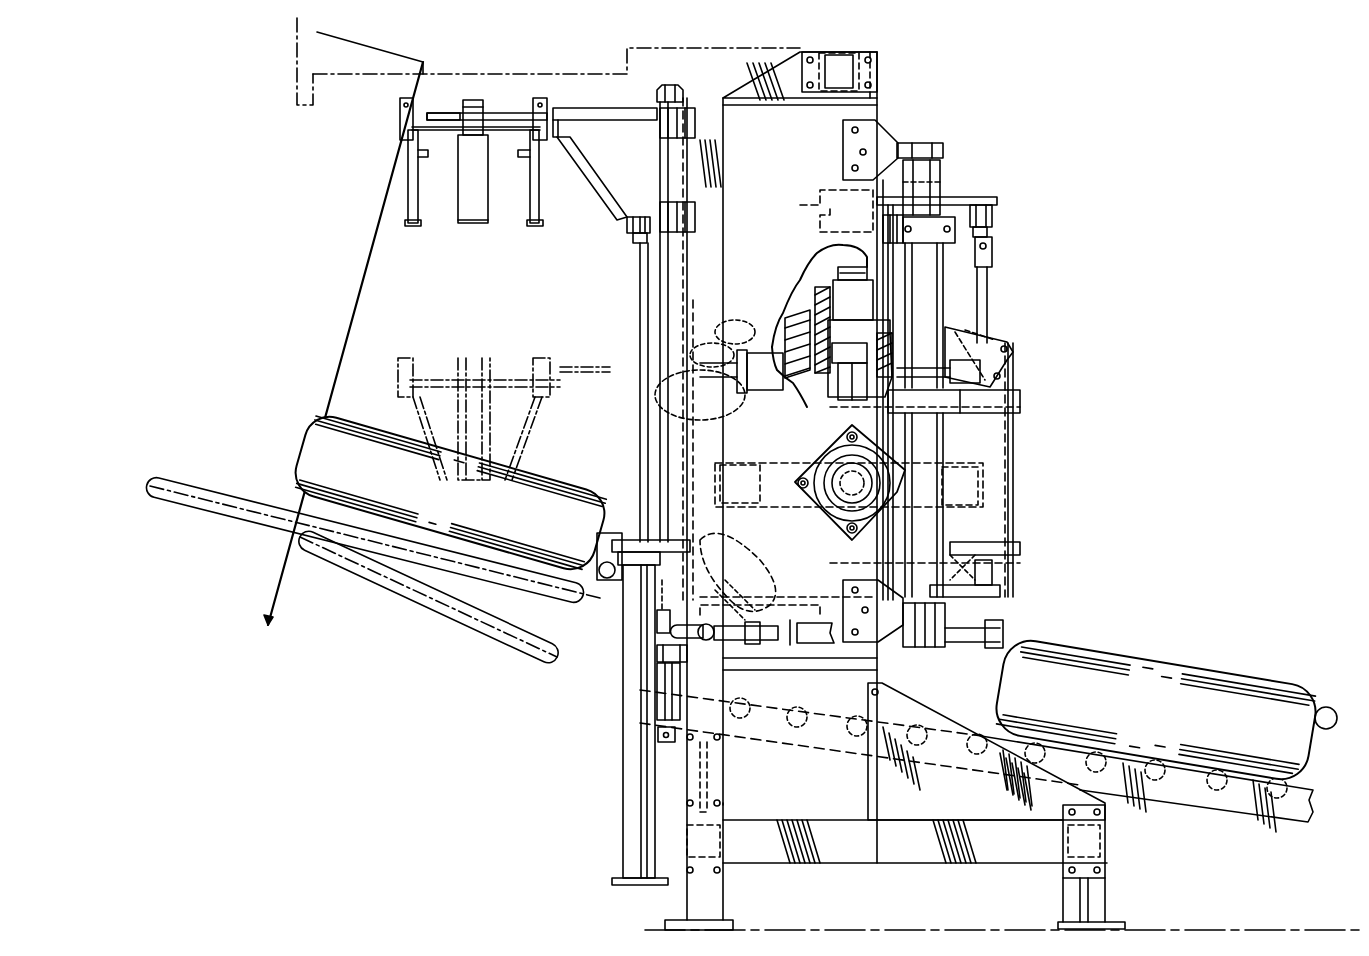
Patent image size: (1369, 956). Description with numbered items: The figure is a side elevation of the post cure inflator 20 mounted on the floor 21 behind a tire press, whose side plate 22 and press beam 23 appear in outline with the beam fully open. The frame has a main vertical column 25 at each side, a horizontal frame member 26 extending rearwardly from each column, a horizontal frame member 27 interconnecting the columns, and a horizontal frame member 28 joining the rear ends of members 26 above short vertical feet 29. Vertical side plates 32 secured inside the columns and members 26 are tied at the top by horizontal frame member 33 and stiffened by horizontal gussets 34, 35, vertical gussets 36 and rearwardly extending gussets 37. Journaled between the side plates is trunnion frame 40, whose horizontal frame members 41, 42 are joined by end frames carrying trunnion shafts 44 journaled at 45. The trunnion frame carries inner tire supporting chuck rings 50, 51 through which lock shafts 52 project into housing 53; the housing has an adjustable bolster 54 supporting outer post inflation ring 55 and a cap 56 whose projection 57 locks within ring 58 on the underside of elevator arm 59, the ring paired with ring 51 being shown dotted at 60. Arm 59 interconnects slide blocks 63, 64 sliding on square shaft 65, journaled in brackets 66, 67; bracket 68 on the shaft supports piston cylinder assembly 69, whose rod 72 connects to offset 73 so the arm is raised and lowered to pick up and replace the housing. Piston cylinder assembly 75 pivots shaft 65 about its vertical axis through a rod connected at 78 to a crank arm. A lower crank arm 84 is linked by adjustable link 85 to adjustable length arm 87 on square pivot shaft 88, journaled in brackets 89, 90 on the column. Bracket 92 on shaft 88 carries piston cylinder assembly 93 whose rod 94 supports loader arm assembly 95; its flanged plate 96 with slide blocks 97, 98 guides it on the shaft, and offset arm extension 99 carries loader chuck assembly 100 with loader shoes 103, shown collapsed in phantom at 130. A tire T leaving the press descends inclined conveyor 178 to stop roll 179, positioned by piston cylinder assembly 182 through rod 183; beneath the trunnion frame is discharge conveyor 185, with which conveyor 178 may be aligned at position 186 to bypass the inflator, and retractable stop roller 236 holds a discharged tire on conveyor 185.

The post cure inflator 20 is at (1020, 355).
The floor 21 is at (888, 928).
The side plate 22 is at (278, 598).
The press beam 23 is at (580, 76).
The main vertical column 25 is at (705, 242).
The horizontal frame member 26 is at (850, 850).
The horizontal frame member 27 is at (722, 852).
The horizontal frame member 28 is at (1105, 840).
The vertical foot 29 is at (1100, 905).
The side plate 32 is at (835, 812).
The horizontal frame member 33 is at (878, 72).
The gusset 34 is at (786, 106).
The gusset 35 is at (788, 668).
The gusset 36 is at (708, 773).
The gusset 37 is at (990, 812).
The trunnion frame 40 is at (1018, 481).
The horizontal frame member 41 is at (790, 465).
The horizontal frame member 42 is at (985, 503).
The trunnion shaft 44 is at (845, 520).
The trunnion shaft journal 45 is at (830, 495).
The inner tire supporting chuck ring 50 is at (745, 393).
The inner tire supporting chuck ring 51 is at (765, 555).
The lock shaft 52 is at (805, 312).
The housing 53 is at (817, 290).
The adjustable bolster 54 is at (836, 337).
The outer post inflation ring 55 is at (828, 395).
The cap 56 is at (822, 270).
The projection 57 is at (845, 267).
The ring 58 is at (823, 205).
The elevator arm 59 is at (956, 197).
The ring 60 is at (792, 605).
The slide block 63 is at (952, 244).
The slide block 64 is at (1000, 410).
The square shaft 65 is at (940, 172).
The bracket 66 is at (885, 142).
The bracket 67 is at (888, 635).
The bracket 68 is at (1000, 592).
The piston cylinder assembly 69 is at (1010, 548).
The rod 72 is at (988, 290).
The offset 73 is at (1000, 199).
The piston cylinder assembly 75 is at (725, 347).
The rod connection 78 is at (973, 335).
The crank arm 84 is at (950, 648).
The adjustable link 85 is at (822, 645).
The adjustable length arm 87 is at (695, 645).
The square pivot shaft 88 is at (660, 259).
The bracket 89 is at (660, 96).
The bracket 90 is at (657, 655).
The bracket 92 is at (600, 535).
The piston cylinder assembly 93 is at (625, 762).
The rod 94 is at (640, 303).
The loader arm assembly 95 is at (572, 196).
The plate 96 is at (607, 187).
The slide block 97 is at (695, 122).
The slide block 98 is at (695, 207).
The offset arm extension 99 is at (503, 113).
The loader chuck assembly 100 is at (402, 141).
The loader shoe 103 is at (461, 205).
The phantom shoe position 130 is at (526, 440).
The inclined conveyor 178 is at (488, 587).
The stop roll 179 is at (605, 530).
The piston cylinder assembly 182 is at (658, 705).
The rod 183 is at (657, 628).
The discharge conveyor 185 is at (1187, 798).
The pivoted conveyor position 186 is at (478, 637).
The retractable stop roller 236 is at (1320, 707).
The tire T is at (305, 432).